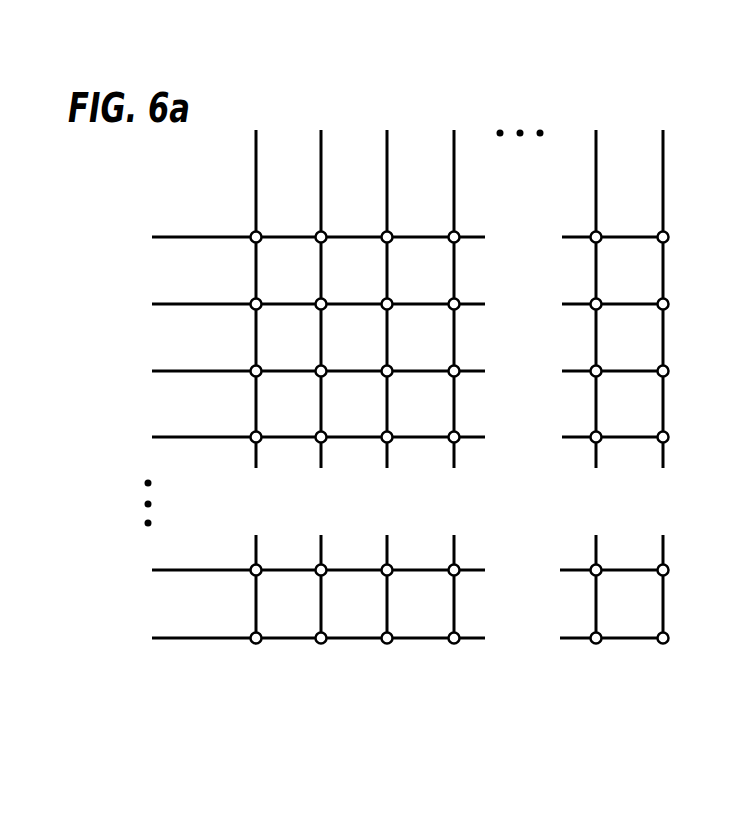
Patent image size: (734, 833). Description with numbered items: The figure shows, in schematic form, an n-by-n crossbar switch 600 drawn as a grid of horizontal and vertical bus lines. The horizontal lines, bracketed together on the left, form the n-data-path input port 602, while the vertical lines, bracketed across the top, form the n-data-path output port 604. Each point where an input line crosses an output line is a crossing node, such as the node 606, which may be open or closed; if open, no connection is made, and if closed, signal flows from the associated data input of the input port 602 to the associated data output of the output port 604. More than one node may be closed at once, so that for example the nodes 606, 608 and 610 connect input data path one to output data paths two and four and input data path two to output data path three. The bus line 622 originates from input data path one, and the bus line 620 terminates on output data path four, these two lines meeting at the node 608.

The crossbar switch 600 is at (452, 708).
The input port 602 is at (99, 219).
The output port 604 is at (672, 80).
The crossing node 606 is at (325, 232).
The crossing node 608 is at (458, 241).
The crossing node 610 is at (392, 298).
The bus line 620 is at (455, 182).
The bus line 622 is at (220, 235).